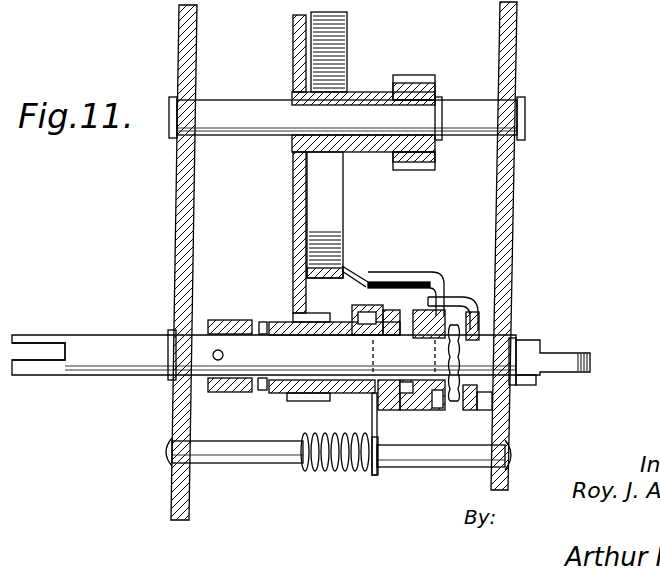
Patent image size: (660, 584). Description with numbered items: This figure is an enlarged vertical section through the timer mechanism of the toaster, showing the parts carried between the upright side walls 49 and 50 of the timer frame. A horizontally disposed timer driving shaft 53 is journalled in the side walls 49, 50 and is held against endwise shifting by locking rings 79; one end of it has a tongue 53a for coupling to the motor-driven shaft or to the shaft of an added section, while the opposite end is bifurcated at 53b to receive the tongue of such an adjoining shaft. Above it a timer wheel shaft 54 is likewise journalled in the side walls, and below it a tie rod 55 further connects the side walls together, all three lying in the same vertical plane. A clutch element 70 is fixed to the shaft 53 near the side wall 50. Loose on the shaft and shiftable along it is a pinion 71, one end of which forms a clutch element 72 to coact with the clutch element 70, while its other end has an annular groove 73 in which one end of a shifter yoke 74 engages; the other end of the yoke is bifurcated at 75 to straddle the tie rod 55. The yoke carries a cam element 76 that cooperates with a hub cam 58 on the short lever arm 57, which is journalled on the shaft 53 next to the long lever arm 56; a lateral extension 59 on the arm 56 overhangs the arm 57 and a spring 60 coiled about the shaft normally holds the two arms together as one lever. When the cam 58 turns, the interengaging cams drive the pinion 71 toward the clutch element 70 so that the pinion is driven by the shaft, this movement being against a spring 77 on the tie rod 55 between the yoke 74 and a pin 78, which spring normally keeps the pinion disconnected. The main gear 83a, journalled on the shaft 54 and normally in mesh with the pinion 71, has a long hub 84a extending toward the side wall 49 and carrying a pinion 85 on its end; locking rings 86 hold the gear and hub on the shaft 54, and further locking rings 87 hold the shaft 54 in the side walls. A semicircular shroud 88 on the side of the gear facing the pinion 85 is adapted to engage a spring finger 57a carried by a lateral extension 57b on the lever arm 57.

The upright side wall 49 is at (514, 206).
The upright side wall 50 is at (176, 233).
The timer driving shaft 53 is at (264, 355).
The tongue 53a is at (585, 356).
The bifurcated end 53b is at (30, 377).
The timer wheel shaft 54 is at (347, 117).
The tie rod 55 is at (422, 465).
The long lever arm 56 is at (478, 408).
The short lever arm 57 is at (452, 401).
The spring finger 57a is at (352, 272).
The lateral extension 57b is at (408, 275).
The hub cam 58 is at (435, 410).
The lateral extension 59 is at (468, 296).
The spring 60 is at (480, 318).
The clutch element 70 is at (212, 396).
The pinion 71 is at (288, 393).
The clutch element 72 is at (262, 393).
The annular groove 73 is at (356, 398).
The shifter yoke 74 is at (356, 310).
The bifurcated end 75 is at (375, 476).
The cam element 76 is at (400, 410).
The spring 77 is at (330, 470).
The pin 78 is at (297, 462).
The locking ring 79 is at (170, 380).
The main gear 83a is at (305, 190).
The hub 84a is at (372, 92).
The pinion 85 is at (435, 78).
The locking ring 86 is at (442, 103).
The locking ring 87 is at (176, 97).
The shroud 88 is at (337, 213).